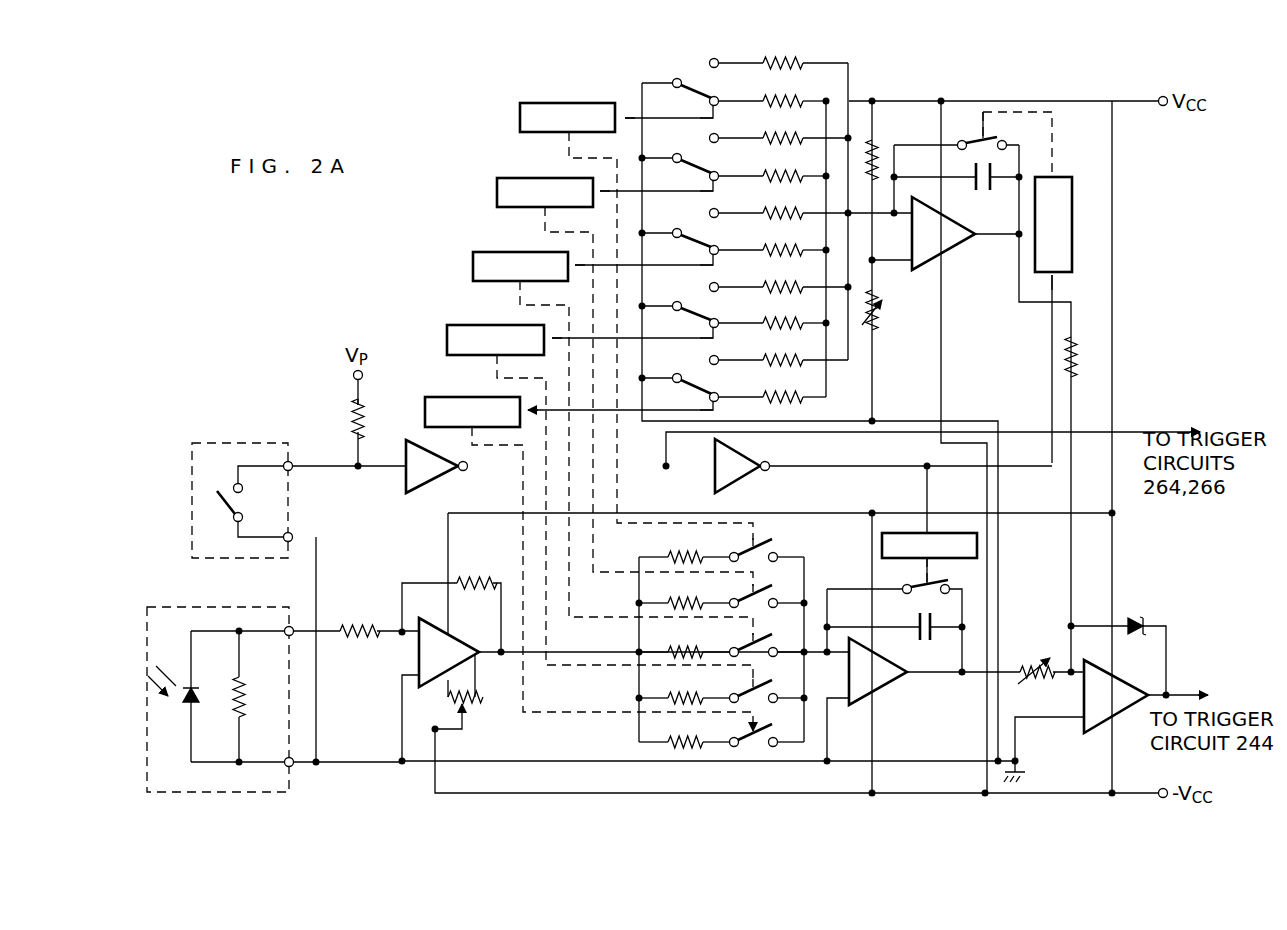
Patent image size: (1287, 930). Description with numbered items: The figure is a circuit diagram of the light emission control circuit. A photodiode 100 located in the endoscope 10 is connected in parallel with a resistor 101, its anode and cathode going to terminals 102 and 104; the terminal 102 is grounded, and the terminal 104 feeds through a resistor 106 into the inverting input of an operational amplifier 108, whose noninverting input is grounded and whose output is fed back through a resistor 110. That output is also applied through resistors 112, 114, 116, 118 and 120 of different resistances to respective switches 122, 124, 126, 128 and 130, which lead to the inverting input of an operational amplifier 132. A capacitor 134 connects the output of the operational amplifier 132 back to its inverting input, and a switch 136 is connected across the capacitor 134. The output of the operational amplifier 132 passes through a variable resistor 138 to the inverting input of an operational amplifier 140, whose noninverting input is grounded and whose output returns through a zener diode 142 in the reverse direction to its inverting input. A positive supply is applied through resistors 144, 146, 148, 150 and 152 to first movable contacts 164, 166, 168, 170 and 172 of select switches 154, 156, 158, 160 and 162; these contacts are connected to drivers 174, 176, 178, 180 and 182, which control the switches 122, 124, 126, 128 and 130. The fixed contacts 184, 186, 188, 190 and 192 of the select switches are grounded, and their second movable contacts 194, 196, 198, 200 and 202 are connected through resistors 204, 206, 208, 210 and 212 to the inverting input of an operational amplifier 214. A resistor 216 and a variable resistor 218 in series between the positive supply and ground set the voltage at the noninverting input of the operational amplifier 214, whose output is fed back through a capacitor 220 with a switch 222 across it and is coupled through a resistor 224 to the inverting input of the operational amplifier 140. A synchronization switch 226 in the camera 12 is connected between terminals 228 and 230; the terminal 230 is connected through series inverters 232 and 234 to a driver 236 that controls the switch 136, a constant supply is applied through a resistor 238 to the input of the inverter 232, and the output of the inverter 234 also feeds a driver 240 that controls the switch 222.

The endoscope 10 is at (184, 607).
The camera 12 is at (234, 442).
The photodiode 100 is at (183, 708).
The resistor 101 is at (243, 701).
The terminal 102 is at (293, 766).
The terminal 104 is at (286, 635).
The resistor 106 is at (361, 624).
The operational amplifier 108 is at (452, 638).
The resistor 110 is at (476, 576).
The resistor 112 is at (684, 544).
The resistor 114 is at (684, 590).
The resistor 116 is at (684, 639).
The resistor 118 is at (684, 685).
The resistor 120 is at (684, 729).
The switch 122 is at (779, 554).
The switch 124 is at (779, 601).
The switch 126 is at (779, 649).
The switch 128 is at (779, 696).
The switch 130 is at (779, 740).
The operational amplifier 132 is at (882, 688).
The capacitor 134 is at (927, 645).
The switch 136 is at (919, 594).
The variable resistor 138 is at (1035, 662).
The operational amplifier 140 is at (1084, 696).
The zener diode 142 is at (1135, 616).
The resistor 144 is at (794, 90).
The resistor 146 is at (794, 165).
The resistor 148 is at (794, 239).
The resistor 150 is at (794, 312).
The resistor 152 is at (794, 386).
The select switch 154 is at (714, 98).
The select switch 156 is at (714, 173).
The select switch 158 is at (714, 247).
The select switch 160 is at (714, 320).
The select switch 162 is at (714, 394).
The first movable contact 164 is at (684, 104).
The first movable contact 166 is at (684, 178).
The first movable contact 168 is at (684, 252).
The first movable contact 170 is at (684, 325).
The first movable contact 172 is at (684, 398).
The driver 174 is at (548, 103).
The driver 176 is at (500, 178).
The driver 178 is at (473, 252).
The driver 180 is at (448, 325).
The driver 182 is at (460, 397).
The fixed contact 184 is at (673, 80).
The fixed contact 186 is at (674, 156).
The fixed contact 188 is at (674, 231).
The fixed contact 190 is at (674, 304).
The fixed contact 192 is at (674, 376).
The second movable contact 194 is at (715, 59).
The second movable contact 196 is at (713, 136).
The second movable contact 198 is at (713, 211).
The second movable contact 200 is at (713, 285).
The second movable contact 202 is at (713, 358).
The resistor 204 is at (805, 51).
The resistor 206 is at (805, 127).
The resistor 208 is at (805, 202).
The resistor 210 is at (805, 276).
The resistor 212 is at (805, 349).
The operational amplifier 214 is at (950, 238).
The resistor 216 is at (888, 152).
The variable resistor 218 is at (883, 318).
The capacitor 220 is at (983, 193).
The switch 222 is at (996, 144).
The resistor 224 is at (1078, 365).
The synchronization switch 226 is at (230, 513).
The terminal 228 is at (292, 532).
The terminal 230 is at (292, 461).
The inverter 232 is at (424, 458).
The inverter 234 is at (743, 459).
The driver 236 is at (947, 531).
The resistor 238 is at (365, 421).
The driver 240 is at (1062, 177).